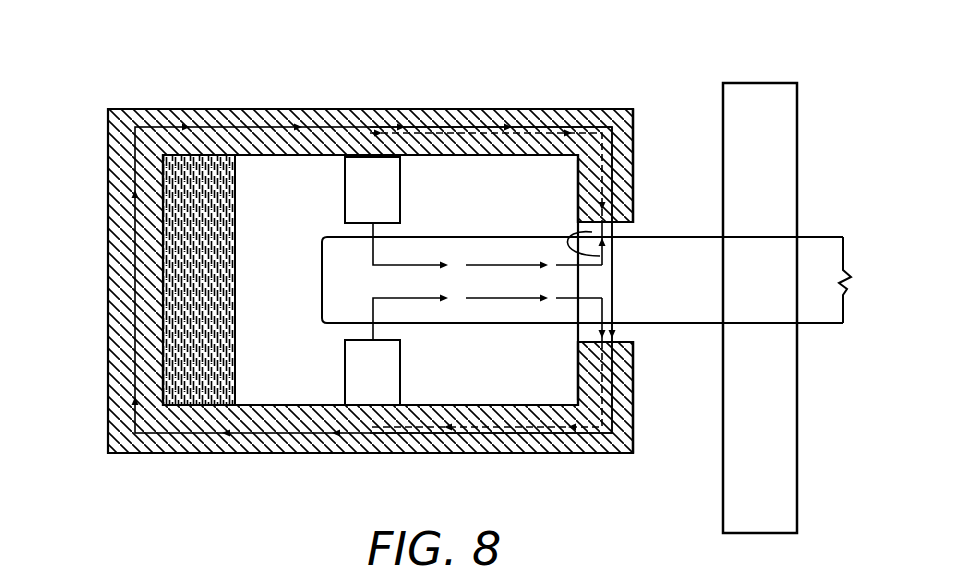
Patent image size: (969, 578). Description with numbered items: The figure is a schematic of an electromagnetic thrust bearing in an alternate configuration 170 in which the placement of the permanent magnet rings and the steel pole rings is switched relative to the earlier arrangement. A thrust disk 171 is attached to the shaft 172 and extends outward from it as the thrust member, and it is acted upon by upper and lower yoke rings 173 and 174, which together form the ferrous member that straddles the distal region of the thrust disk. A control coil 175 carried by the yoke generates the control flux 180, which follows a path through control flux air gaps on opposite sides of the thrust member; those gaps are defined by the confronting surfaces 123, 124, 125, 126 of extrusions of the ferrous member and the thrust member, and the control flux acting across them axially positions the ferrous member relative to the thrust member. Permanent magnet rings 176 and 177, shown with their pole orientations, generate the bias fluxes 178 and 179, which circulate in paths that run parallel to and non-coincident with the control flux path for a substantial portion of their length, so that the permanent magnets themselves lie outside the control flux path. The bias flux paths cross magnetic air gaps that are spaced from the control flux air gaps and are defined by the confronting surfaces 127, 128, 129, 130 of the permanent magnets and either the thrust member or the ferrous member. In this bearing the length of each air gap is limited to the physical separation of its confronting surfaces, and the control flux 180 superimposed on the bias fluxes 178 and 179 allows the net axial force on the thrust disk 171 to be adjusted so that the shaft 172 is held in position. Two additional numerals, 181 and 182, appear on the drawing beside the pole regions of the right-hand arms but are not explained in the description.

The configuration 170 is at (384, 261).
The thrust disk 171 is at (803, 237).
The shaft 172 is at (798, 402).
The upper yoke ring 173 is at (254, 453).
The lower yoke ring 174 is at (258, 108).
The control coil 175 is at (237, 275).
The permanent magnet ring 176 is at (343, 207).
The permanent magnet ring 177 is at (343, 377).
The bias flux 178 is at (633, 140).
The bias flux 179 is at (633, 416).
The control flux 180 is at (130, 422).
The upper pole piece 181 is at (633, 202).
The lower pole piece 182 is at (633, 358).
The confronting surface 123 is at (585, 226).
The confronting surface 124 is at (602, 256).
The confronting surface 125 is at (578, 343).
The confronting surface 126 is at (637, 327).
The confronting surface 127 is at (400, 223).
The confronting surface 128 is at (398, 236).
The confronting surface 129 is at (398, 343).
The confronting surface 130 is at (322, 330).